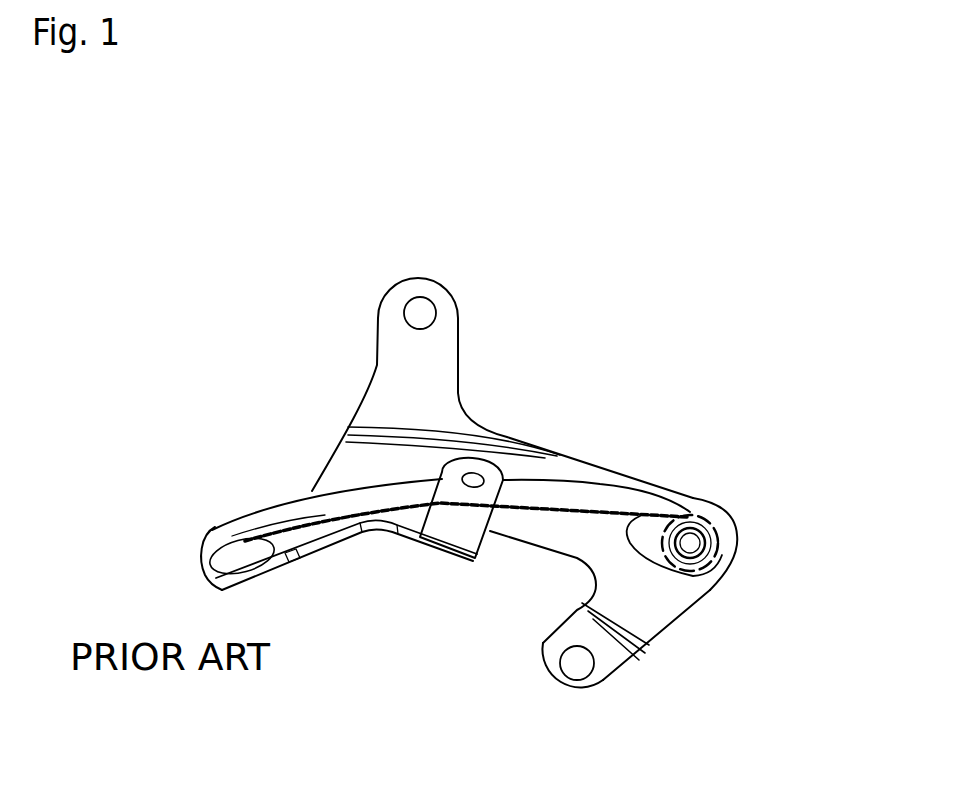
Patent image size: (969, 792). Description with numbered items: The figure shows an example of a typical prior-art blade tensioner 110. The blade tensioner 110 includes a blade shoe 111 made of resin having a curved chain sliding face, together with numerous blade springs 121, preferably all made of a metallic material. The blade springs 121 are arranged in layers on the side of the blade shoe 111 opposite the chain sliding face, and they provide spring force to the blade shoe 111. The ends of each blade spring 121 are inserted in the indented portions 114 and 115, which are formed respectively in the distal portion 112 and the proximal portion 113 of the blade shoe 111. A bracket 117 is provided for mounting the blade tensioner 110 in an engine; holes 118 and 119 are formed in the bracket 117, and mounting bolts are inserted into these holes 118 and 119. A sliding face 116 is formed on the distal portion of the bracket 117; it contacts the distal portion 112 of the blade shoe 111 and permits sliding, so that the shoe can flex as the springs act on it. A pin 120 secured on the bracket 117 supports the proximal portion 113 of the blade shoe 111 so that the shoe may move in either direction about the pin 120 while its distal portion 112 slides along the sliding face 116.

The blade tensioner 110 is at (680, 326).
The blade shoe 111 is at (317, 503).
The distal portion 112 is at (212, 568).
The proximal portion 113 is at (703, 585).
The indented portion 114 is at (232, 536).
The indented portion 115 is at (690, 517).
The sliding face 116 is at (252, 585).
The bracket 117 is at (667, 610).
The hole 118 is at (577, 662).
The hole 119 is at (420, 313).
The pin 120 is at (713, 543).
The blade spring 121 is at (597, 500).